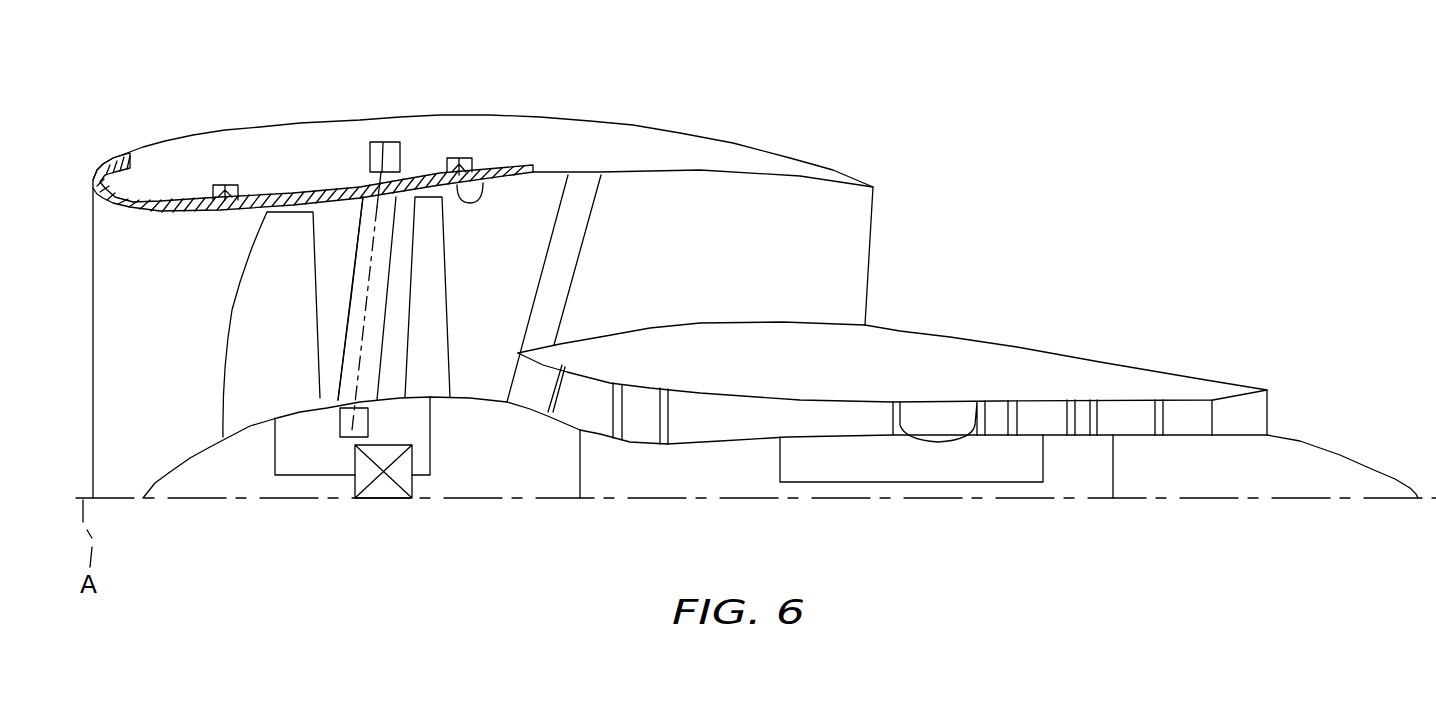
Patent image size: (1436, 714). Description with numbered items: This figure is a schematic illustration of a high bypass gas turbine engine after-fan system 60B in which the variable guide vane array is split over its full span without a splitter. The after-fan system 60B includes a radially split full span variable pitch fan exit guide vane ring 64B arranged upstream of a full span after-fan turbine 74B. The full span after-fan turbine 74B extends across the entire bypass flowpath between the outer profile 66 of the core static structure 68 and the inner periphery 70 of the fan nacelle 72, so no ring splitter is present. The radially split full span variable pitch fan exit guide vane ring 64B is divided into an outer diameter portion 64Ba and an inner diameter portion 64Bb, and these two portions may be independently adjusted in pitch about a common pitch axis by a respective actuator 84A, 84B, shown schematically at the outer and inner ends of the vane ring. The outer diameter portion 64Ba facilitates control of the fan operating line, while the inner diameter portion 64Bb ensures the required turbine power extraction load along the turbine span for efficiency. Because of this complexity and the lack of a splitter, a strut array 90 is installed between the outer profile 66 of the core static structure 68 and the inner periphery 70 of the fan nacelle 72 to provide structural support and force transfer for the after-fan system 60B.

The after-fan system 60B is at (531, 92).
The fan nacelle 72 is at (632, 143).
The inner periphery of the fan nacelle 70 is at (478, 180).
The actuator 84A is at (383, 142).
The actuator 84B is at (340, 440).
The radially split full span variable pitch fan exit guide vane ring 64B is at (348, 308).
The outer diameter portion 64Ba is at (367, 222).
The inner diameter portion 64Bb is at (353, 368).
The full span after-fan turbine 74B is at (435, 278).
The strut array 90 is at (580, 228).
The outer profile of the core static structure 66 is at (490, 390).
The core static structure 68 is at (547, 457).